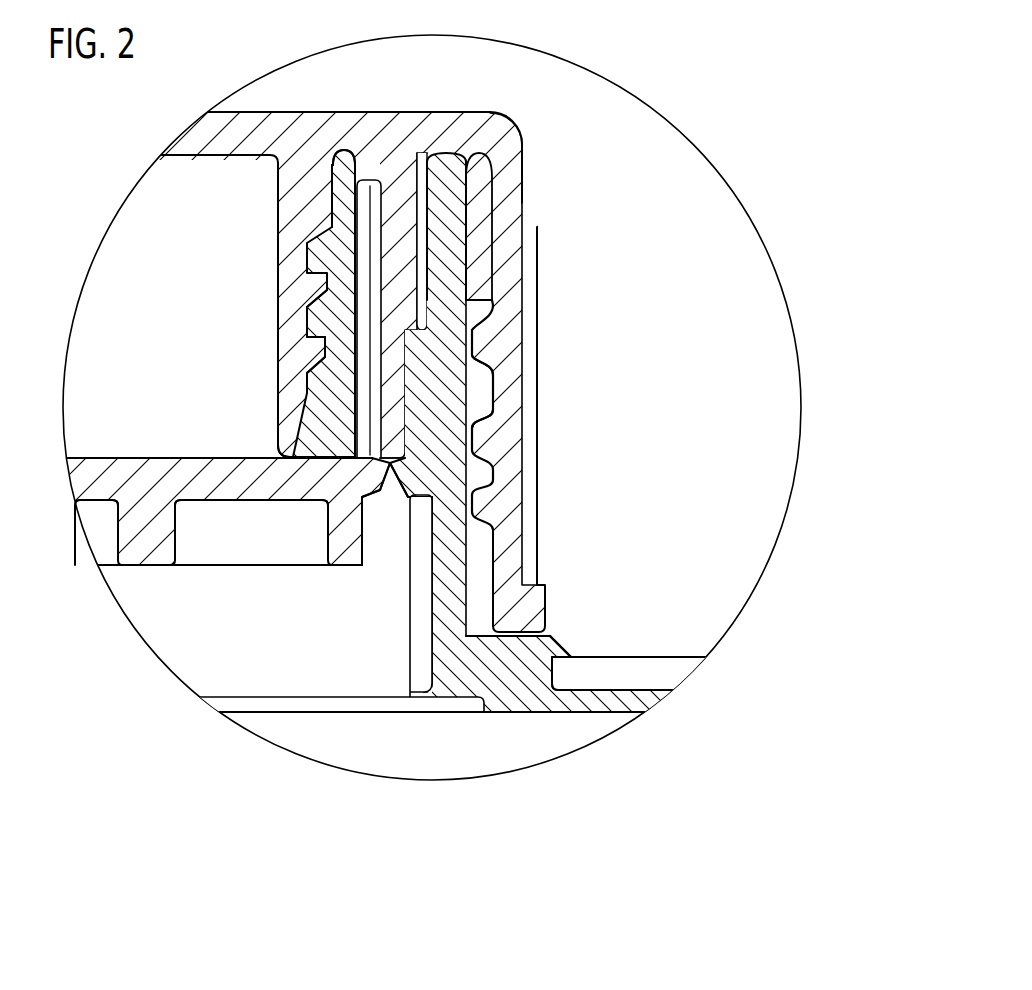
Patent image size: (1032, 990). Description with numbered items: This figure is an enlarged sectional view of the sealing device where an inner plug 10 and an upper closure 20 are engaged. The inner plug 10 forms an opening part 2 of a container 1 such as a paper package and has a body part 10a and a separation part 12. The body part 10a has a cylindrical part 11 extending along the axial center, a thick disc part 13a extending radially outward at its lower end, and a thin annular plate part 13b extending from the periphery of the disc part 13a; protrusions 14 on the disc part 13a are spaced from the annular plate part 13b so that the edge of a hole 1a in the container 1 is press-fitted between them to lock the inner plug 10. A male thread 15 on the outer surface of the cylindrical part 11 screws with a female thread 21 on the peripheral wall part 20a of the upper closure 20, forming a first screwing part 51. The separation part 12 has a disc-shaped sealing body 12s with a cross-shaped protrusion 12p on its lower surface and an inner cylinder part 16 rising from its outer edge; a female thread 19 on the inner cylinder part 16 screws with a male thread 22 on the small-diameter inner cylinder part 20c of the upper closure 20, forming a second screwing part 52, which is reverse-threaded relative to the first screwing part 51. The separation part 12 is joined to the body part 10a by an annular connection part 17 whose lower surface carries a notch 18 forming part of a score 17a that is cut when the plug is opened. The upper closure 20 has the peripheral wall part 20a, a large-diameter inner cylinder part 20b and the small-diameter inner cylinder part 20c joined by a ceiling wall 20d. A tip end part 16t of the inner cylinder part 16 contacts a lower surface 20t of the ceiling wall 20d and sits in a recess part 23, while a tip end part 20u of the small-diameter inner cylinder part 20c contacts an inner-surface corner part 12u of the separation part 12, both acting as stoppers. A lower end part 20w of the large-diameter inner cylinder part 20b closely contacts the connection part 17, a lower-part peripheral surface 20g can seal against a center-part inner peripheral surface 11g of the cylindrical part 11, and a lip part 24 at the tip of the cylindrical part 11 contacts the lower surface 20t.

The container 1 is at (633, 657).
The hole 1a is at (541, 692).
The opening part 2 is at (266, 673).
The inner plug 10 is at (472, 548).
The body part 10a is at (443, 718).
The cylindrical part 11 is at (412, 602).
The center-part inner peripheral surface 11g is at (452, 290).
The separation part 12 is at (206, 566).
The cross-shaped protrusion 12p is at (153, 566).
The sealing body 12s is at (133, 470).
The inner-surface corner part 12u is at (292, 482).
The disc part 13a is at (508, 700).
The annular plate part 13b is at (616, 706).
The protrusion 14 is at (561, 645).
The male thread 15 is at (482, 368).
The inner cylinder part 16 is at (337, 262).
The tip end part 16t is at (349, 172).
The connection part 17 is at (348, 470).
The score 17a is at (366, 583).
The notch 18 is at (388, 470).
The female thread 19 is at (321, 307).
The upper closure 20 is at (512, 465).
The peripheral wall part 20a is at (528, 297).
The large-diameter inner cylinder part 20b is at (482, 173).
The small-diameter inner cylinder part 20c is at (290, 215).
The ceiling wall 20d is at (270, 112).
The lower-part peripheral surface 20g is at (468, 300).
The lower surface 20t is at (358, 170).
The tip end part 20u is at (291, 442).
The lower end part 20w is at (412, 498).
The female thread 21 is at (488, 428).
The male thread 22 is at (307, 380).
The recess part 23 is at (337, 172).
The lip part 24 is at (487, 150).
The first screwing part 51 is at (566, 384).
The second screwing part 52 is at (233, 352).